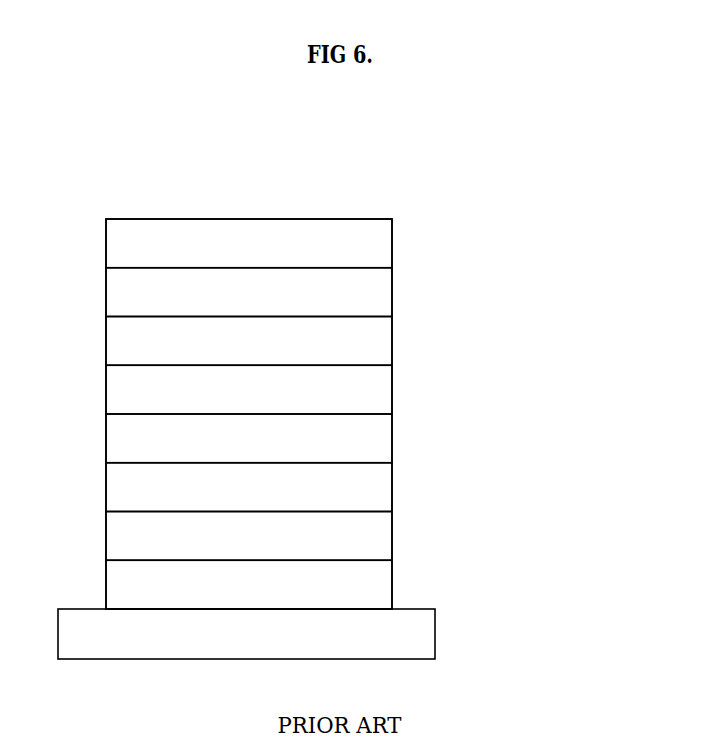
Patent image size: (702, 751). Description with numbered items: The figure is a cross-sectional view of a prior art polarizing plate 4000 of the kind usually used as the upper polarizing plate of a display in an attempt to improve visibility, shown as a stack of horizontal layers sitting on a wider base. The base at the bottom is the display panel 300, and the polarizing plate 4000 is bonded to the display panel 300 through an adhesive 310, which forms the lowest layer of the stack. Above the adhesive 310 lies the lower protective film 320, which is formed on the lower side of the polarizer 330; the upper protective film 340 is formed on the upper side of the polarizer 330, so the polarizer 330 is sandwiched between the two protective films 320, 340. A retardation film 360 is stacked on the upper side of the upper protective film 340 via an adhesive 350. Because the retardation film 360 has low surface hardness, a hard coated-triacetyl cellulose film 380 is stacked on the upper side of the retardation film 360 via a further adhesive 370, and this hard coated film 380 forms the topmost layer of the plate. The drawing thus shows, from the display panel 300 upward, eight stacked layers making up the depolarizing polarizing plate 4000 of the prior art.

The polarizing plate 4000 is at (430, 182).
The display panel 300 is at (420, 634).
The adhesive 310 is at (378, 585).
The lower protective film 320 is at (378, 536).
The polarizer 330 is at (378, 487).
The upper protective film 340 is at (378, 438).
The adhesive 350 is at (378, 389).
The retardation film 360 is at (378, 341).
The adhesive 370 is at (378, 292).
The hard coated-triacetyl cellulose film 380 is at (378, 242).